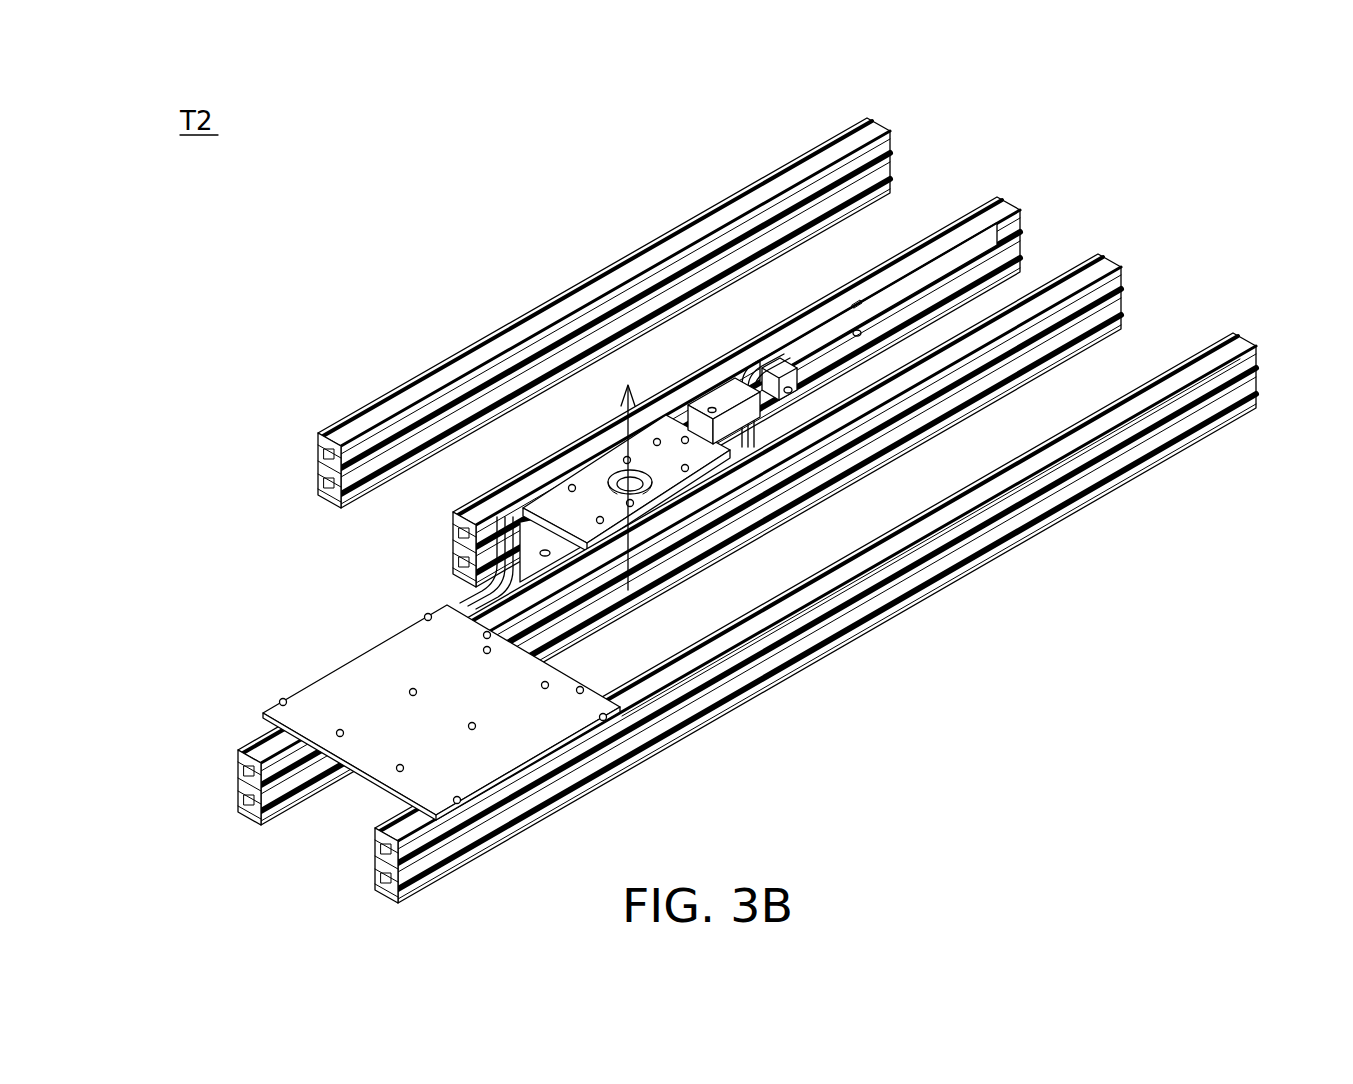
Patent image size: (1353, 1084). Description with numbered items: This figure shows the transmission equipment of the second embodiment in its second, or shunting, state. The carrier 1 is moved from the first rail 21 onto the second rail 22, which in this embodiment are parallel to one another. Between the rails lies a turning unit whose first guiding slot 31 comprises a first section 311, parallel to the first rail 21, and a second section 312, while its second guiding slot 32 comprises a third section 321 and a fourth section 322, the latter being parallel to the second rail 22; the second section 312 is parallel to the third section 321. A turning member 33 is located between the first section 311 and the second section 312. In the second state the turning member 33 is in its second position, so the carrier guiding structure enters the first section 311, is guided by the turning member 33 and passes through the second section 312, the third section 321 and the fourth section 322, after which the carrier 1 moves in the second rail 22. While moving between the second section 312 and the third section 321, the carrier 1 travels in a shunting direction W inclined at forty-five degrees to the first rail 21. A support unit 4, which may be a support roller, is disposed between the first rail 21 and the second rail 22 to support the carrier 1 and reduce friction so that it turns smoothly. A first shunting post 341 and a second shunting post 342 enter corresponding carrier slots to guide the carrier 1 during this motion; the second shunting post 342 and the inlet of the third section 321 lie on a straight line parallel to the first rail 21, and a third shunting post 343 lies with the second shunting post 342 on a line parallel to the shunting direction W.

The carrier 1 is at (310, 707).
The support unit 4 is at (620, 480).
The first rail 21 is at (377, 857).
The second rail 22 is at (993, 213).
The first guiding slot 31 is at (391, 552).
The first section 311 is at (457, 600).
The second section 312 is at (450, 542).
The second guiding slot 32 is at (742, 269).
The third section 321 is at (740, 385).
The fourth section 322 is at (757, 363).
The turning member 33 is at (748, 651).
The first shunting post 341 is at (570, 487).
The second shunting post 342 is at (688, 470).
The third shunting post 343 is at (685, 440).
The shunting direction W is at (632, 590).